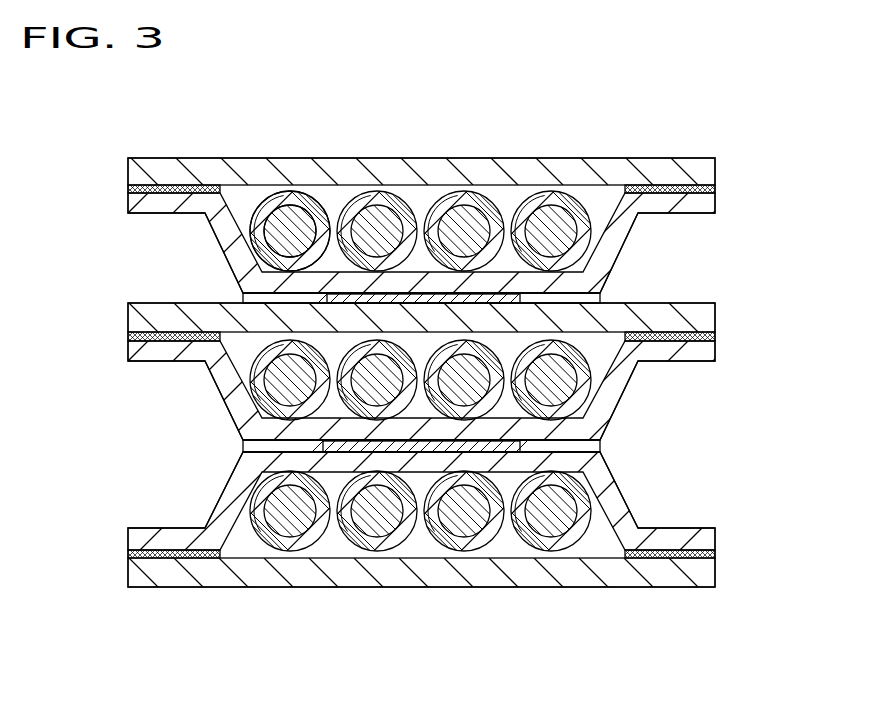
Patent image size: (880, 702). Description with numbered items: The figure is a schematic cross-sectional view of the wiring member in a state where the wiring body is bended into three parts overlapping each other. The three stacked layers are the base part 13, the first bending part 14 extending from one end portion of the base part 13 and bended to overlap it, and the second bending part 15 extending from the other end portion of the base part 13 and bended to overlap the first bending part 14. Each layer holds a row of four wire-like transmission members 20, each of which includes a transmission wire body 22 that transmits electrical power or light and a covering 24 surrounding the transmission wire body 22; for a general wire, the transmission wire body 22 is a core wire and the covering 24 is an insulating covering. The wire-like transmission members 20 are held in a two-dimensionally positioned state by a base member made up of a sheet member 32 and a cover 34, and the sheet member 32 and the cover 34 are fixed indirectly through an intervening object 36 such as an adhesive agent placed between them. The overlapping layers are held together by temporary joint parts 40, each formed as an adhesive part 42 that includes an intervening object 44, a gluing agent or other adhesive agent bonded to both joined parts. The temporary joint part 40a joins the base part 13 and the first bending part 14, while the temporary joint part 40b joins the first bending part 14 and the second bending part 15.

The base part 13 is at (143, 592).
The first bending part 14 is at (143, 370).
The second bending part 15 is at (143, 222).
The wire-like transmission member 20 is at (342, 112).
The transmission wire body 22 is at (289, 193).
The covering 24 is at (300, 213).
The sheet member 32 is at (700, 162).
The cover 34 is at (622, 238).
The intervening object 36 is at (715, 189).
The temporary joint part 40 is at (333, 361).
The temporary joint part 40a is at (323, 446).
The temporary joint part 40b is at (327, 298).
The adhesive part 42 is at (560, 298).
The intervening object 44 is at (468, 362).